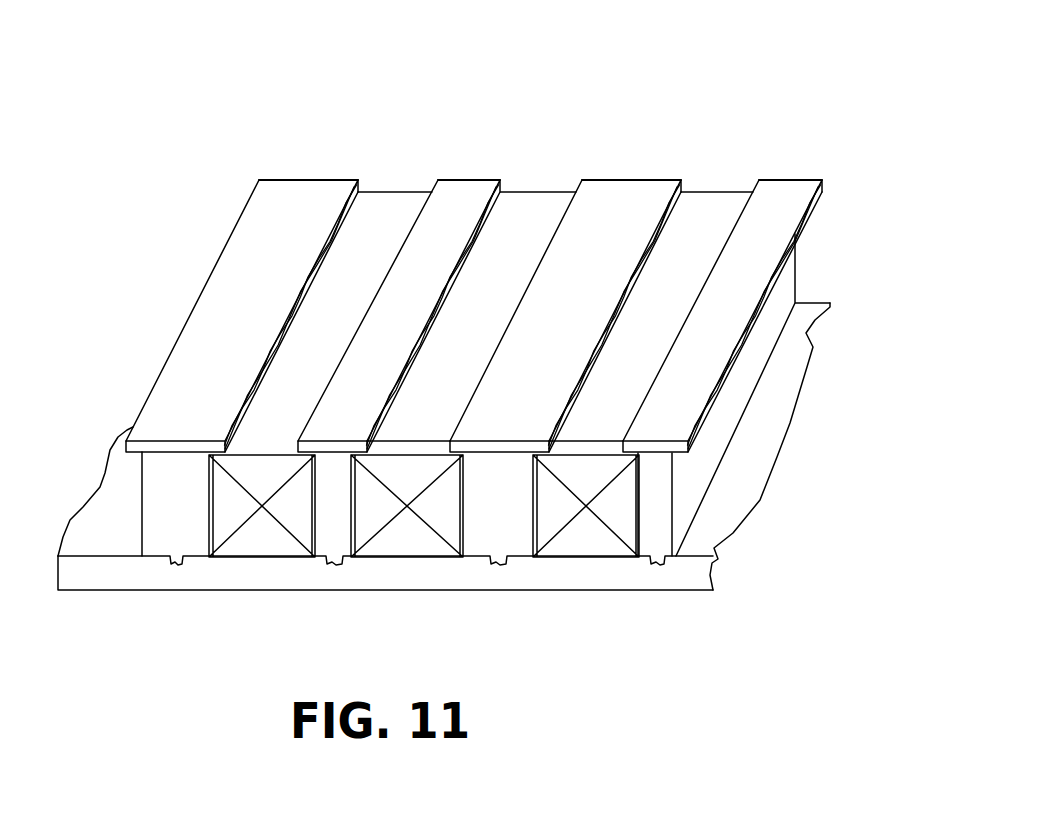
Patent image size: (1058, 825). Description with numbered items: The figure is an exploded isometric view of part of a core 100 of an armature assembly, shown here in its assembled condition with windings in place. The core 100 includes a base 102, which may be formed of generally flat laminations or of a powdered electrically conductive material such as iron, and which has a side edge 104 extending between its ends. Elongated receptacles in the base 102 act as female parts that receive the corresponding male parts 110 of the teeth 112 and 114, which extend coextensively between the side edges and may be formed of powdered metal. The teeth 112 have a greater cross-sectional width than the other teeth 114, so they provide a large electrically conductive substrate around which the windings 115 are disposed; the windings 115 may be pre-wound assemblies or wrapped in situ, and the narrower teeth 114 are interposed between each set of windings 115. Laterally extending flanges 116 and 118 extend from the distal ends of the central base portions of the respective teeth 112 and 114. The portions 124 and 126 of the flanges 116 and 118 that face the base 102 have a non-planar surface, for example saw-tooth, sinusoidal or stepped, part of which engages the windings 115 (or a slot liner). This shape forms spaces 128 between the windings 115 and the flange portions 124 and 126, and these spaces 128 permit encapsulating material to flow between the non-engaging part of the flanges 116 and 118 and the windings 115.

The core 100 is at (862, 227).
The base 102 is at (793, 414).
The side edge 104 is at (260, 574).
The male part 110 is at (168, 563).
The tooth 112 is at (316, 172).
The tooth 114 is at (472, 172).
The winding 115 is at (424, 506).
The flange 116 is at (185, 324).
The flange 118 is at (397, 257).
The non-planar portion 124 is at (359, 190).
The non-planar portion 126 is at (500, 190).
The space 128 is at (251, 397).